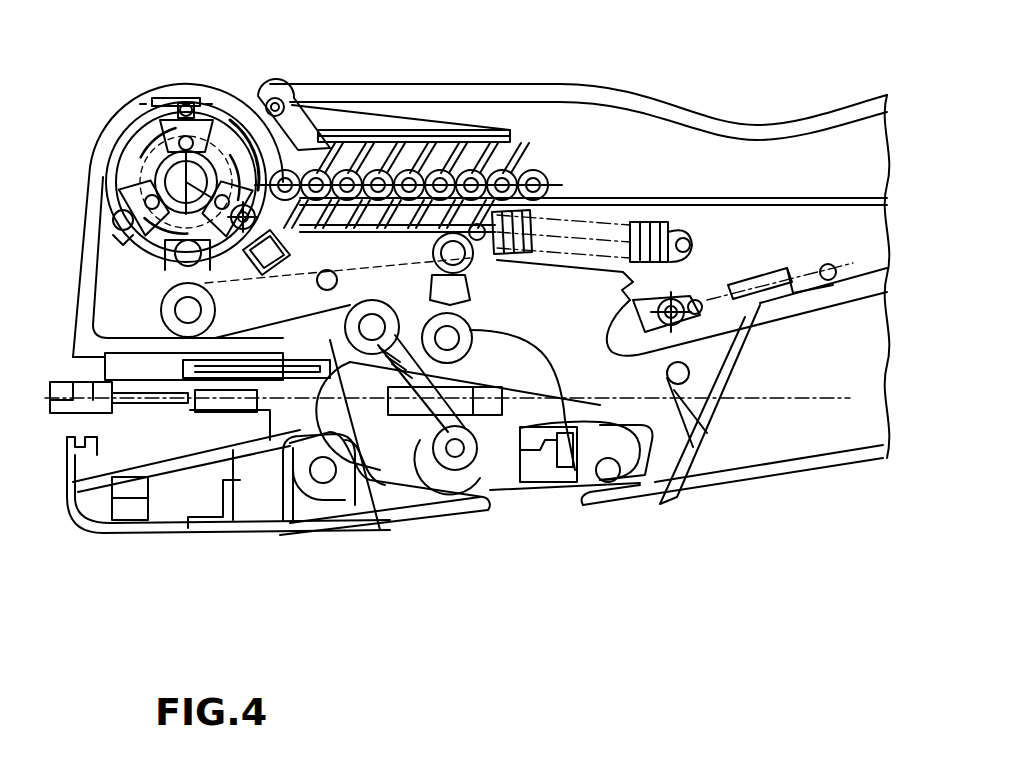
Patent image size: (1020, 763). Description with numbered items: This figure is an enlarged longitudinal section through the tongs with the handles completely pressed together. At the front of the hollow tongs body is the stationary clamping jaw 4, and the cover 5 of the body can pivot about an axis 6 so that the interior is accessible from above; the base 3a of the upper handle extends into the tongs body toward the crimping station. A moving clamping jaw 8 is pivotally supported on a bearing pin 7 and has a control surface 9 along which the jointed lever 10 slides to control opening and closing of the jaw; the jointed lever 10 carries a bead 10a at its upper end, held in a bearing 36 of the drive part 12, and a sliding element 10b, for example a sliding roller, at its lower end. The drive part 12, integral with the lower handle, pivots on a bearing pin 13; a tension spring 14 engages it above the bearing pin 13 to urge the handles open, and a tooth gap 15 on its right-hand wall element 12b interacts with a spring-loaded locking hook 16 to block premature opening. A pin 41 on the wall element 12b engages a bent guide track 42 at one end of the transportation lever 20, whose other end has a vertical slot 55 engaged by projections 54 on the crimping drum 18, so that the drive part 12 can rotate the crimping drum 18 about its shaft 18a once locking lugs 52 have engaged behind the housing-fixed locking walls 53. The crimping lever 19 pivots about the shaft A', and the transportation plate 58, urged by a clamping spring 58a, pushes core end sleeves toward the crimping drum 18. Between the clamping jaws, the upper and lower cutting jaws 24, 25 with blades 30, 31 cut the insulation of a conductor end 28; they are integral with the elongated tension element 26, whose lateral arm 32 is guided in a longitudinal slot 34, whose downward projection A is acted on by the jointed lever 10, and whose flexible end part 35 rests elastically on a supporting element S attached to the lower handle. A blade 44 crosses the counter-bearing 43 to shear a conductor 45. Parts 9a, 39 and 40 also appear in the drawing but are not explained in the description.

The base 3a is at (832, 205).
The stationary clamping jaw 4 is at (118, 352).
The cover 5 is at (790, 132).
The axis 6 is at (288, 100).
The bearing pin 7 is at (318, 485).
The moving clamping jaw 8 is at (155, 495).
The control surface 9 is at (410, 495).
The arm end 9a is at (470, 490).
The jointed lever 10 is at (455, 490).
The bead 10a is at (362, 500).
The sliding element 10b is at (485, 500).
The drive part 12 is at (602, 345).
The right-hand wall element 12b is at (455, 220).
The bearing pin 13 is at (472, 338).
The tension spring 14 is at (690, 222).
The tooth gap 15 is at (620, 282).
The locking hook 16 is at (735, 320).
The crimping drum 18 is at (135, 110).
The shaft 18a is at (232, 118).
The crimping lever 19 is at (255, 334).
The transportation lever 20 is at (176, 252).
The upper cutting jaw 24 is at (225, 490).
The lower cutting jaw 25 is at (265, 500).
The elongated tension element 26 is at (660, 410).
The conductor end 28 is at (78, 500).
The blade 30 is at (190, 376).
The blade 31 is at (195, 424).
The lateral arm 32 is at (492, 390).
The longitudinal slot 34 is at (398, 500).
The end part 35 is at (700, 415).
The bearing 36 is at (345, 330).
The cam 39 is at (455, 298).
The roller 40 is at (468, 262).
The pin 41 is at (322, 288).
The guide track 42 is at (262, 258).
The counter-bearing 43 is at (625, 485).
The blade 44 is at (578, 485).
The conductor 45 is at (680, 490).
The locking lug 52 is at (188, 100).
The locking wall 53 is at (172, 96).
The projection 54 is at (114, 220).
The vertical slot 55 is at (136, 190).
The transportation plate 58 is at (495, 130).
The clamping spring 58a is at (345, 130).
The projection A is at (562, 534).
The shaft A' is at (149, 294).
The supporting element S is at (690, 373).